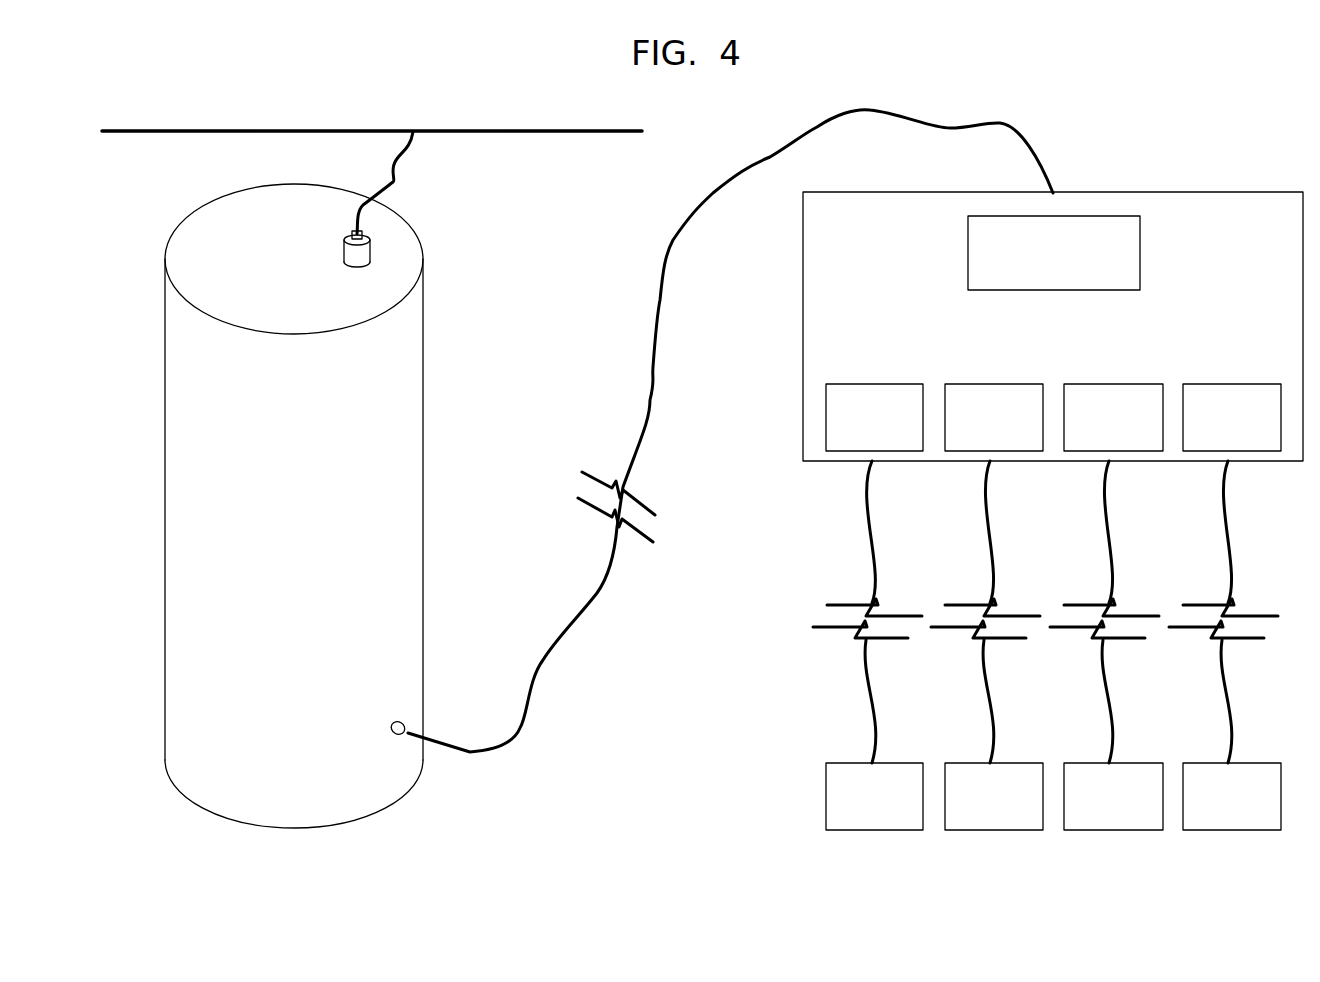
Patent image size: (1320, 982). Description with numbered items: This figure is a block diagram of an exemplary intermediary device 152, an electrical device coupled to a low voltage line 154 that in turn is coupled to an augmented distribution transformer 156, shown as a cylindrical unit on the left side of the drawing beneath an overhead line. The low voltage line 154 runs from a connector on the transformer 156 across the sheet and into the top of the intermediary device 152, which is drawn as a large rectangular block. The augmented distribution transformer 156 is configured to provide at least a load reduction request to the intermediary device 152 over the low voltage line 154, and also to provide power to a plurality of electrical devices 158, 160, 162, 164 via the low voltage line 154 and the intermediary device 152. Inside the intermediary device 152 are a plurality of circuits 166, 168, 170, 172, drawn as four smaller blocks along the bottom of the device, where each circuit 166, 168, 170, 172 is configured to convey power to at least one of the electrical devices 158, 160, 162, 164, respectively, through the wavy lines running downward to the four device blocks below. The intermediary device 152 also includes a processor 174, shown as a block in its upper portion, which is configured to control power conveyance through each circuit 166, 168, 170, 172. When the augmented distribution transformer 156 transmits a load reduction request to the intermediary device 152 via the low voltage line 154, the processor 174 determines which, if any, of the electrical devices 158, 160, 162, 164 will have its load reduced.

The intermediary device 152 is at (880, 250).
The low voltage line 154 is at (465, 758).
The augmented distribution transformer 156 is at (276, 678).
The electrical device 158 is at (854, 811).
The electrical device 160 is at (973, 811).
The electrical device 162 is at (1092, 811).
The electrical device 164 is at (1211, 811).
The circuit 166 is at (854, 431).
The circuit 168 is at (973, 431).
The circuit 170 is at (1092, 431).
The circuit 172 is at (1211, 431).
The processor 174 is at (1033, 266).